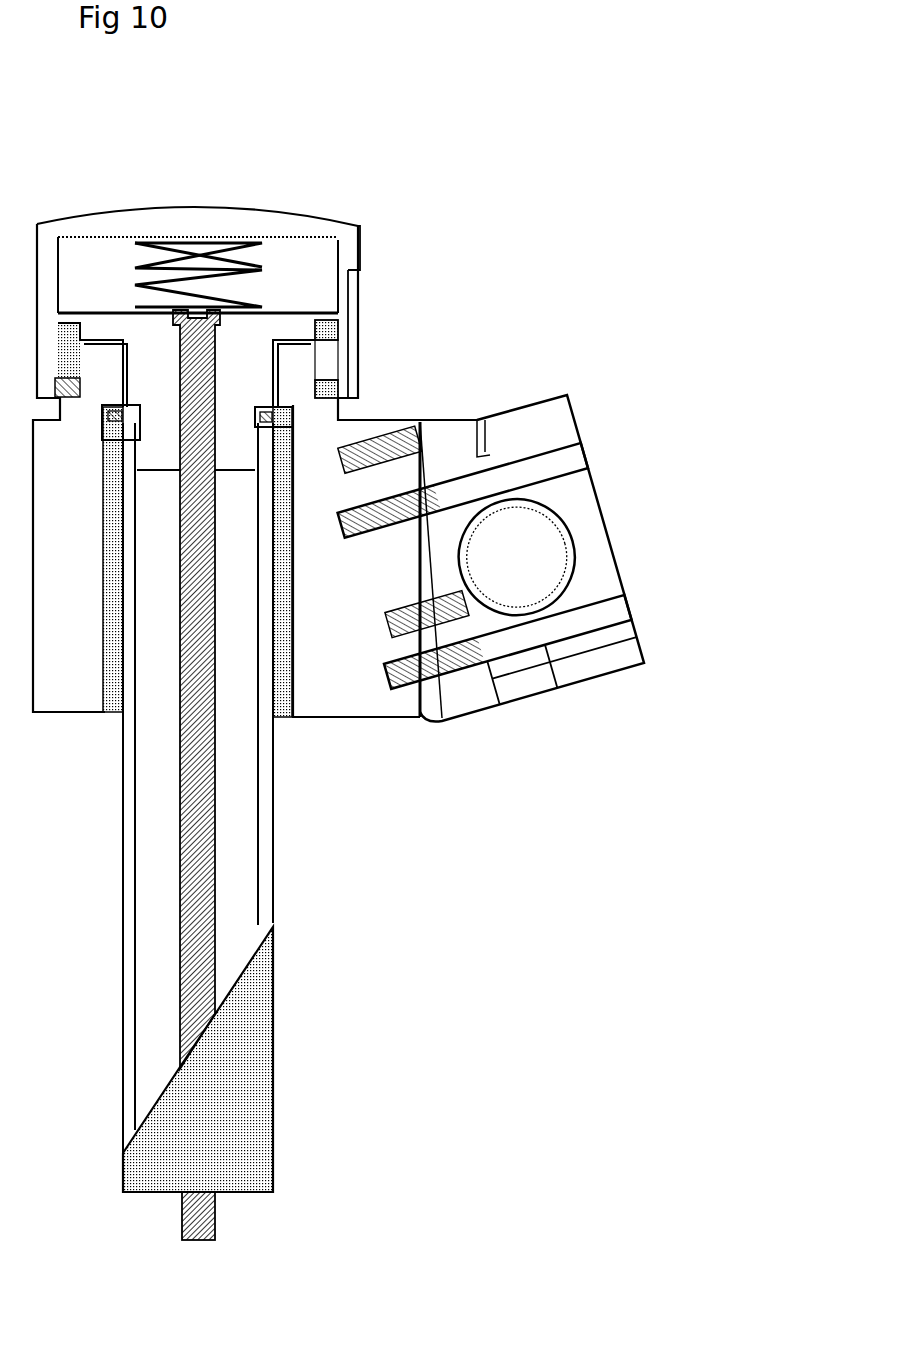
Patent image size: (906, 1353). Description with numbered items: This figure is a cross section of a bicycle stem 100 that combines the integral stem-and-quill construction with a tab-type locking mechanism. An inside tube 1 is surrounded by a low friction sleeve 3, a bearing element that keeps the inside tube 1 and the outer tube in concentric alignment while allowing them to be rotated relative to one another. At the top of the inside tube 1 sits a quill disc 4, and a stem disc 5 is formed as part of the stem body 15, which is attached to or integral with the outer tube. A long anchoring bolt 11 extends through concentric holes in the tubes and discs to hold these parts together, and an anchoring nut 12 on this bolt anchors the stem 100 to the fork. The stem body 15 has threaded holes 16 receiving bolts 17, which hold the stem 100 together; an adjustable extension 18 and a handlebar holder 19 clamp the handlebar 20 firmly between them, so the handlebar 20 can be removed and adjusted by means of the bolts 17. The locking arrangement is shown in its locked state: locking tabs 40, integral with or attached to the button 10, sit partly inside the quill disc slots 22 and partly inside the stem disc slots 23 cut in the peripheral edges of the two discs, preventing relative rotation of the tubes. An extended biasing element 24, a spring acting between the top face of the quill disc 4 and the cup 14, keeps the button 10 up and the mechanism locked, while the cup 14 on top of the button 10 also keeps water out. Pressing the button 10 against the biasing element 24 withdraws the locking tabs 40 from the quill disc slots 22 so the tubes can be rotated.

The inside tube 1 is at (267, 893).
The low friction sleeve 3 is at (271, 700).
The quill disc 4 is at (258, 330).
The stem disc 5 is at (285, 372).
The button 10 is at (347, 293).
The anchoring bolt 11 is at (203, 1223).
The anchoring nut 12 is at (200, 1125).
The cup 14 is at (198, 226).
The stem body 15 is at (318, 692).
The threaded holes 16 is at (400, 457).
The bolts 17 is at (512, 675).
The adjustable extension 18 is at (572, 660).
The handlebar holder 19 is at (478, 655).
The handlebar 20 is at (570, 585).
The quill disc slots 22 is at (330, 323).
The stem disc slots 23 is at (323, 385).
The biasing element 24 is at (222, 258).
The locking tabs 40 is at (323, 352).
The stem 100 is at (498, 385).